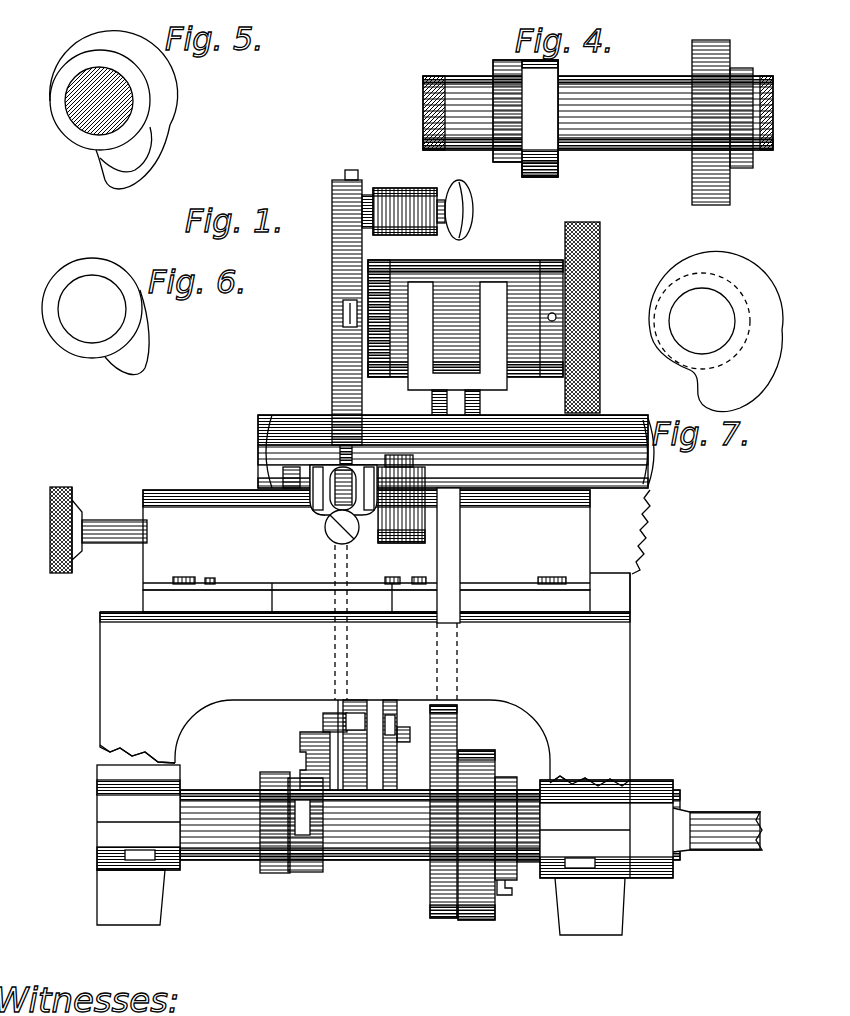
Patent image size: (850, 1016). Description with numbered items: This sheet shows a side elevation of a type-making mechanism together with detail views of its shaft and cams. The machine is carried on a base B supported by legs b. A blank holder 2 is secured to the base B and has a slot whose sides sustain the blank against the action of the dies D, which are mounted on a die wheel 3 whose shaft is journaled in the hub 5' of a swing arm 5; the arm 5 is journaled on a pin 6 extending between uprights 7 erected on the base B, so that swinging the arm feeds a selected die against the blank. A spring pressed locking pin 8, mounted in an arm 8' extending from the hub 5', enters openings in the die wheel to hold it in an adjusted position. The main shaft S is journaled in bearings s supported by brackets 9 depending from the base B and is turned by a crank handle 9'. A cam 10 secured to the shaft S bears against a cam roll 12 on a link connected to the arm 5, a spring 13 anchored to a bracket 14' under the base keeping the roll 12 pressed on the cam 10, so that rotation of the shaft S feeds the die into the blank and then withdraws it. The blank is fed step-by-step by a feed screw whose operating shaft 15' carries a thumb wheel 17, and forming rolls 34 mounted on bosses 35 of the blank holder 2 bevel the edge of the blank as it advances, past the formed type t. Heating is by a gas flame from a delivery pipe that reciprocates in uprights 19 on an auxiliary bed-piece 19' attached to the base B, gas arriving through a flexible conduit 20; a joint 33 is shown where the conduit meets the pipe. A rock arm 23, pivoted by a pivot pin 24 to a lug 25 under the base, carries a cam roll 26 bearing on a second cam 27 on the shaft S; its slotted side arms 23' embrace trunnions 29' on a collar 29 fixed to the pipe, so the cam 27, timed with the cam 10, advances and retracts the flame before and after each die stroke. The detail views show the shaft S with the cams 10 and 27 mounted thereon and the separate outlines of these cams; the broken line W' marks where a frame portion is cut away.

In FIG. 1, the blank holder 2 is at (366, 551).
In FIG. 1, the die wheel 3 is at (335, 350).
In FIG. 1, the swing arm 5 is at (443, 348).
In FIG. 1, the hub 5' is at (484, 317).
In FIG. 1, the pin 6 is at (654, 470).
In FIG. 1, the uprights 7 is at (290, 414).
In FIG. 1, the spring pressed locking pin 8 is at (471, 207).
In FIG. 1, the arm 8' is at (403, 224).
In FIG. 1, the brackets 9 is at (385, 811).
In FIG. 1, the crank handle 9' is at (717, 807).
In FIG. 5, the cam 10 is at (164, 132).
In FIG. 7, the cam 10 is at (755, 333).
In FIG. 4, the cam 10 is at (690, 190).
In FIG. 1, the cam 10 is at (470, 753).
In FIG. 1, the cam roll 12 is at (480, 918).
In FIG. 1, the spring 13 is at (350, 723).
In FIG. 1, the bracket 14' is at (318, 730).
In FIG. 1, the operating shaft 15' is at (114, 493).
In FIG. 1, the thumb wheel 17 is at (52, 560).
In FIG. 1, the uprights 19 is at (366, 571).
In FIG. 1, the auxiliary bed-piece 19' is at (366, 628).
In FIG. 1, the flexible gas supply conduit 20 is at (343, 513).
In FIG. 1, the rock arm 23 is at (267, 733).
In FIG. 1, the side arms 23' is at (358, 509).
In FIG. 1, the pivot pin 24 is at (300, 745).
In FIG. 1, the lug 25 is at (400, 741).
In FIG. 1, the cam roll 26 is at (312, 845).
In FIG. 5, the cam 27 is at (132, 155).
In FIG. 6, the cam 27 is at (89, 350).
In FIG. 4, the cam 27 is at (545, 178).
In FIG. 1, the cam 27 is at (312, 873).
In FIG. 1, the collar 29 is at (263, 459).
In FIG. 1, the trunnions 29' is at (300, 421).
In FIG. 1, the ball 33 is at (346, 533).
In FIG. 1, the forming rolls 34 is at (427, 477).
In FIG. 1, the bosses 35 is at (396, 530).
In FIG. 1, the base B is at (460, 662).
In FIG. 1, the dies D is at (345, 313).
In FIG. 5, the main shaft S is at (72, 120).
In FIG. 4, the main shaft S is at (640, 152).
In FIG. 1, the main shaft S is at (240, 845).
In FIG. 1, the wall W' is at (657, 532).
In FIG. 1, the legs b is at (361, 902).
In FIG. 1, the bearings s is at (540, 867).
In FIG. 1, the type t is at (296, 490).